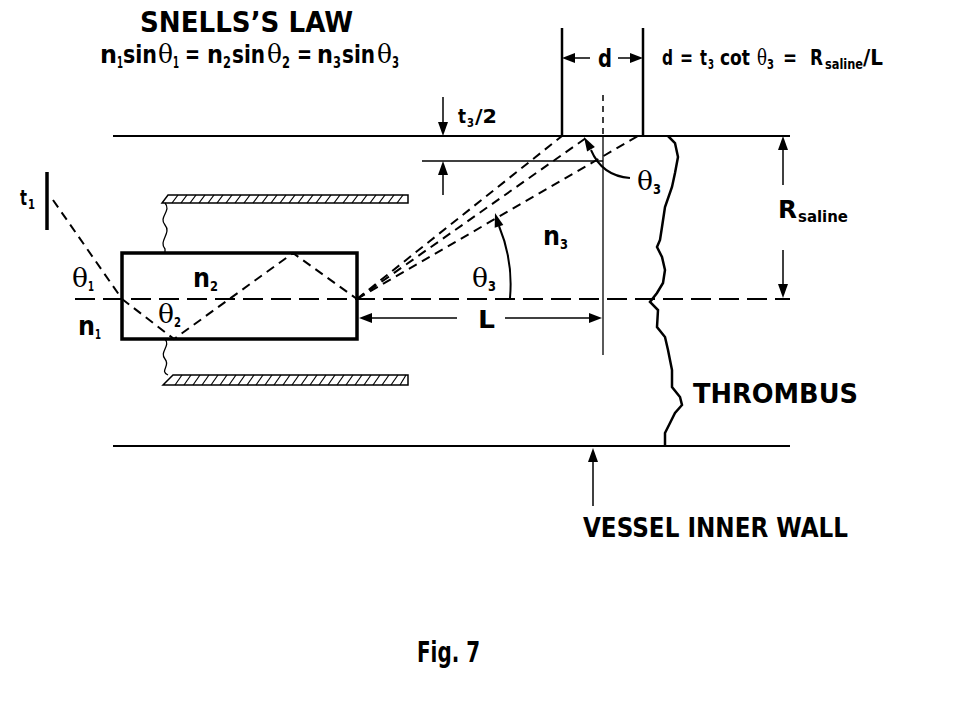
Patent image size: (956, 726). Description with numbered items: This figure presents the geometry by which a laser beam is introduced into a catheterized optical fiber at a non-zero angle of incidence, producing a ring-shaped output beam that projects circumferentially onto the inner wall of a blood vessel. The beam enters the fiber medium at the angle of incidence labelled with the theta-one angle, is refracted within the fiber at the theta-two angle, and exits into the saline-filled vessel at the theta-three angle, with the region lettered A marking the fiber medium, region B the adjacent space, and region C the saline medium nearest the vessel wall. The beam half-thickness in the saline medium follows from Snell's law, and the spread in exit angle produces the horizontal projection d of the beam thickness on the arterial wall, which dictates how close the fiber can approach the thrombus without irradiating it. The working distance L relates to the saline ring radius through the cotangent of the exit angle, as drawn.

The optical window region (refractive index n2) A is at (239, 296).
The region between window and catheter wall B is at (222, 289).
The saline region between catheter wall and vessel wall C is at (260, 169).